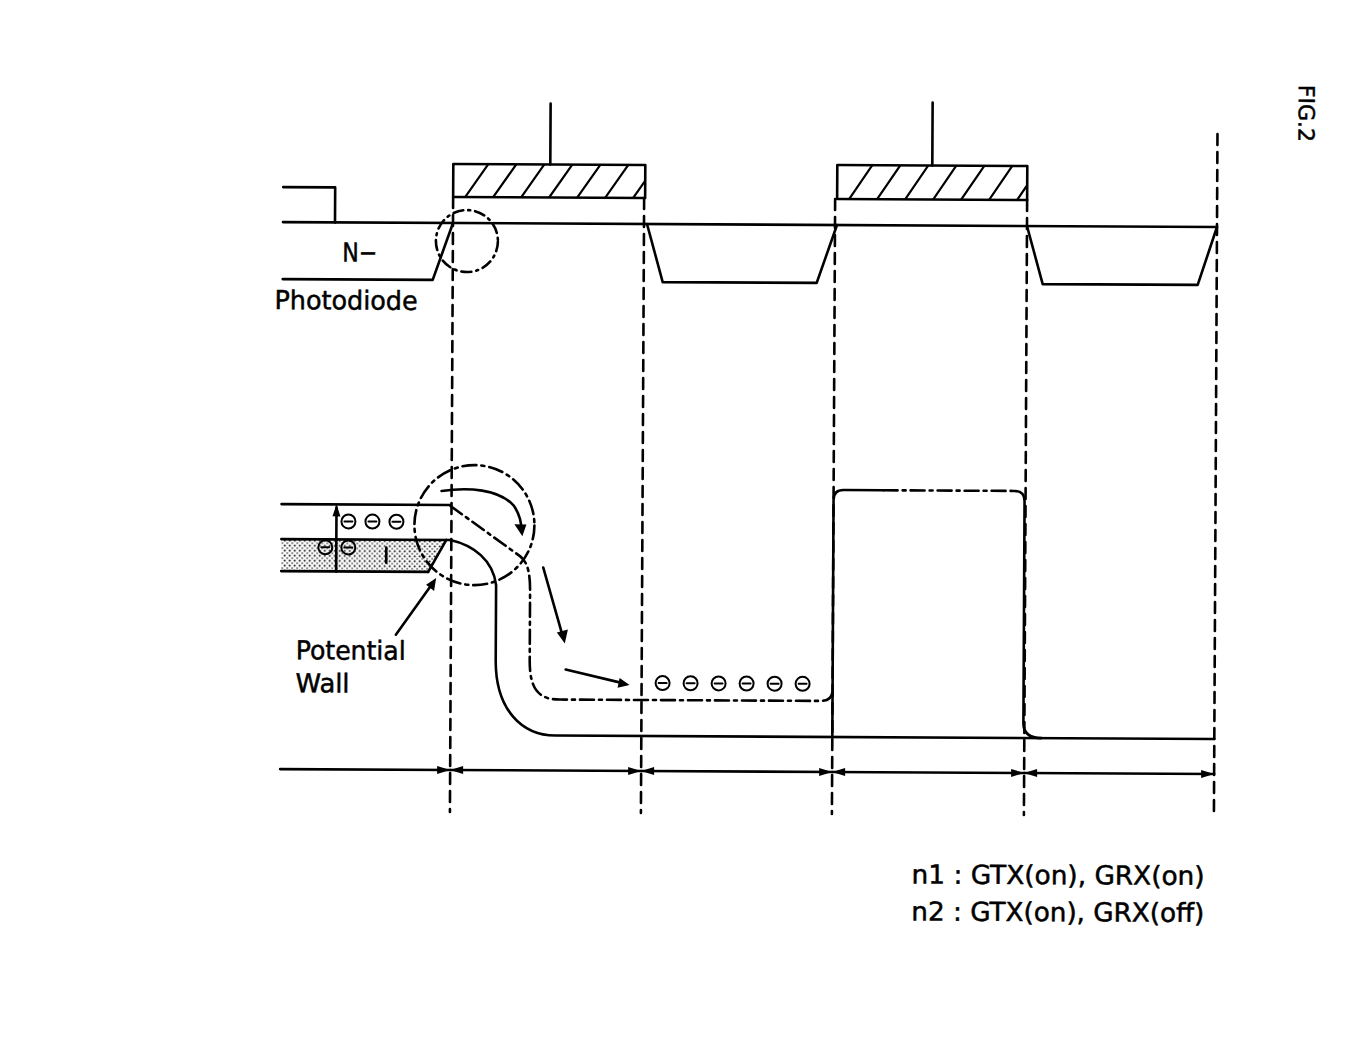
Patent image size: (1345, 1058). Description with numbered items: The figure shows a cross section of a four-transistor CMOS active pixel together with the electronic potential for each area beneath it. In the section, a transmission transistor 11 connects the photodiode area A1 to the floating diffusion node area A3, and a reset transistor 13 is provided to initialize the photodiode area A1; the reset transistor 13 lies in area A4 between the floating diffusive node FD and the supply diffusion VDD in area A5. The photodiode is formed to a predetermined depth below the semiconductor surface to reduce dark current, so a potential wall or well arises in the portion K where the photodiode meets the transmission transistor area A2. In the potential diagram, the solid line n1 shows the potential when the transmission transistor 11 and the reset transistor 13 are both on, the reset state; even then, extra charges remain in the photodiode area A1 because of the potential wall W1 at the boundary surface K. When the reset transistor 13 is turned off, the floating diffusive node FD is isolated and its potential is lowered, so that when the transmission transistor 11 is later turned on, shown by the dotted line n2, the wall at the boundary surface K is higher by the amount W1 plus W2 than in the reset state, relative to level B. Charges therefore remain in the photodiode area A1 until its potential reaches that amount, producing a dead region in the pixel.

The transmission transistor 11 is at (598, 164).
The reset transistor 13 is at (1007, 163).
The boundary surface portion K is at (467, 241).
The potential barrier level B is at (355, 503).
The potential wall W1 is at (258, 572).
The additional potential wall height W2 is at (258, 505).
The floating diffusive node FD is at (740, 223).
The power supply diffusion region VDD is at (1122, 223).
The solid line electronic potential n1 is at (882, 733).
The dotted line electronic potential n2 is at (887, 488).
The photodiode area A1 is at (365, 789).
The transmission transistor area A2 is at (545, 789).
The floating diffusion node area A3 is at (736, 790).
The reset gate region A4 is at (928, 790).
The power supply region A5 is at (1119, 791).